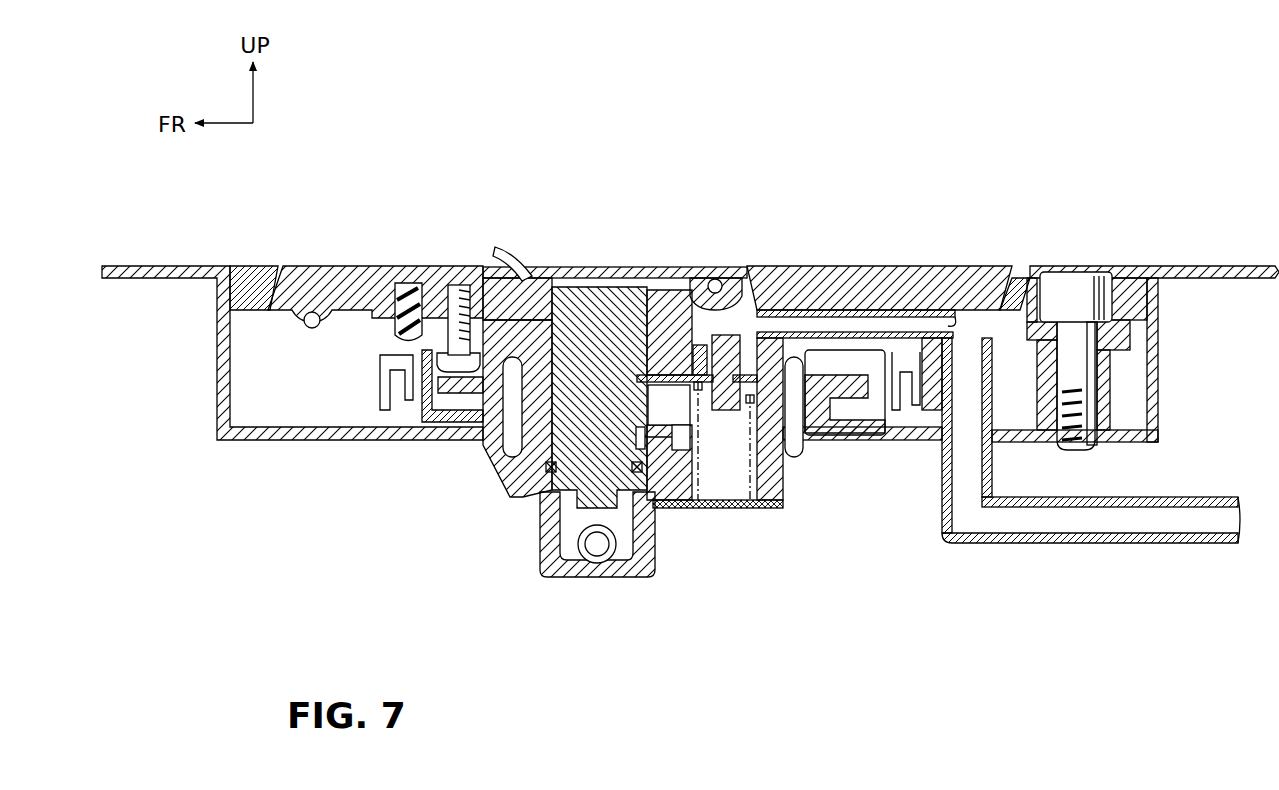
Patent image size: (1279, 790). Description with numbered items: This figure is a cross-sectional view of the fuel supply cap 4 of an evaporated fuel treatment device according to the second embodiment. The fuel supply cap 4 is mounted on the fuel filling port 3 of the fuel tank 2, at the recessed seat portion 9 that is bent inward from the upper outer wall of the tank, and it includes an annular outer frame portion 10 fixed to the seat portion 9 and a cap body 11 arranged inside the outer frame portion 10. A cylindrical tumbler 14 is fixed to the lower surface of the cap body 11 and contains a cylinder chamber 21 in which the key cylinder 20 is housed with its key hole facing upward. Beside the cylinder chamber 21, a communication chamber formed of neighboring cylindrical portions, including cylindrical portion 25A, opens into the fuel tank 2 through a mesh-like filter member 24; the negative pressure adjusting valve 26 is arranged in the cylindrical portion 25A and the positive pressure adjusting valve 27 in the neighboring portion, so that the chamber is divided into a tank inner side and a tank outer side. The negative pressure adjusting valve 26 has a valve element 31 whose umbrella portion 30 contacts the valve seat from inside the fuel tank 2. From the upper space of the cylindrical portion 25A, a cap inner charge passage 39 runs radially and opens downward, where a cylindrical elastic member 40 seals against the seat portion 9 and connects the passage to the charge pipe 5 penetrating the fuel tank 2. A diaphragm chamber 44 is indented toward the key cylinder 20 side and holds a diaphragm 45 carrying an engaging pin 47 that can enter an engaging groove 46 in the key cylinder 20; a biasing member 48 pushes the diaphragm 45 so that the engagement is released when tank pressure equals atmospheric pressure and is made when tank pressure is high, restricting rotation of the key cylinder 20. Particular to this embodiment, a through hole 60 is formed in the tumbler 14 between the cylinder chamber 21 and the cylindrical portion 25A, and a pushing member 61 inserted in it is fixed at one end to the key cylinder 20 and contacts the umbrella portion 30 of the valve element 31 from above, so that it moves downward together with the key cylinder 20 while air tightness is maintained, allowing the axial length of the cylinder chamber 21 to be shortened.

The fuel tank 2 is at (150, 265).
The fuel filling port 3 is at (487, 455).
The fuel supply cap 4 is at (903, 183).
The charge pipe 5 is at (1055, 545).
The seat portion 9 is at (1025, 441).
The outer frame portion 10 is at (253, 265).
The cap body 11 is at (370, 266).
The tumbler 14 is at (540, 458).
The key cylinder 20 is at (597, 375).
The cylinder chamber 21 is at (575, 335).
The filter member 24 is at (705, 462).
The cylindrical portion 25A is at (700, 470).
The negative pressure adjusting valve 26 is at (728, 390).
The positive pressure adjusting valve 27 is at (795, 400).
The umbrella portion 30 is at (787, 443).
The valve element 31 is at (736, 326).
The cap inner charge passage 39 is at (945, 316).
The cylindrical elastic member 40 is at (1037, 330).
The diaphragm chamber 44 is at (690, 440).
The diaphragm 45 is at (722, 504).
The engaging groove 46 is at (645, 438).
The engaging pin 47 is at (642, 445).
The biasing member 48 is at (660, 510).
The through hole 60 is at (698, 360).
The pushing member 61 is at (660, 330).